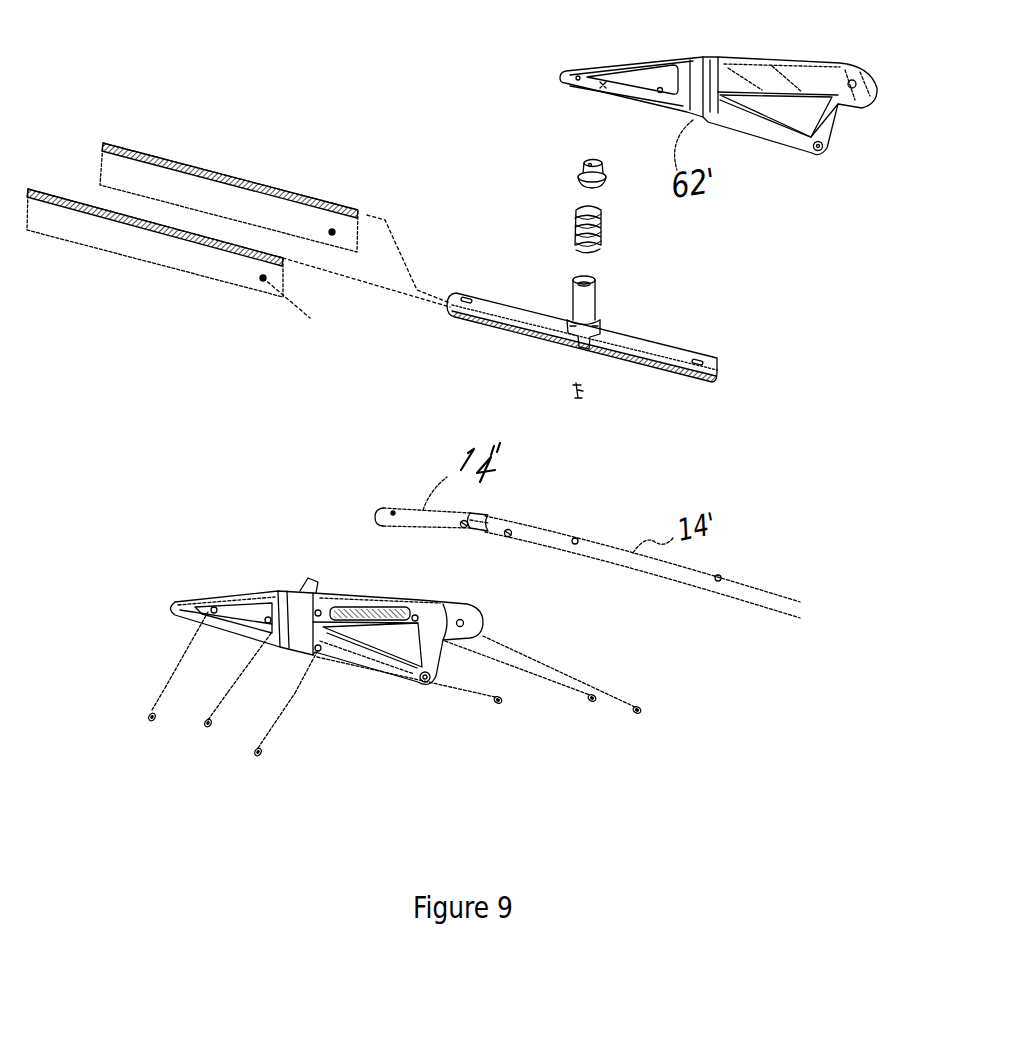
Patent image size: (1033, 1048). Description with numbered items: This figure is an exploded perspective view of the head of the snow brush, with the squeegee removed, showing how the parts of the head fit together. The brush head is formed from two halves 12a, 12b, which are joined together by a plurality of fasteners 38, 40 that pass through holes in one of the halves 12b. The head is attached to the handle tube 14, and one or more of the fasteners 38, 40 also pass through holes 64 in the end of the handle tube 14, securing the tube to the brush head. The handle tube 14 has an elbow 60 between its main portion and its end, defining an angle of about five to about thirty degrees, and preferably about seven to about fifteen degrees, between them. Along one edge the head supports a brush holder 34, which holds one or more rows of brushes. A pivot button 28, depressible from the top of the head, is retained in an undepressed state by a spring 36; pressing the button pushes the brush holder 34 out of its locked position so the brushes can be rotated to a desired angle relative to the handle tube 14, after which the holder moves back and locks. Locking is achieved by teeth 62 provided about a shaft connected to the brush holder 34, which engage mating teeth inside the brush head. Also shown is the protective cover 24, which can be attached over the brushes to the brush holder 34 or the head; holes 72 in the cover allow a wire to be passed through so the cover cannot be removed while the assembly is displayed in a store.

The brush head half 12a is at (574, 71).
The brush head half 12b is at (214, 592).
The handle tube 14 is at (392, 511).
The protective cover 24 is at (320, 200).
The pivot button 28 is at (580, 170).
The brush holder 34 is at (491, 302).
The spring 36 is at (578, 213).
The fasteners 38 is at (152, 721).
The fasteners 40 is at (498, 705).
The elbow 60 is at (489, 510).
The teeth 62 is at (597, 323).
The holes 64 is at (461, 527).
The holes 72 is at (332, 235).